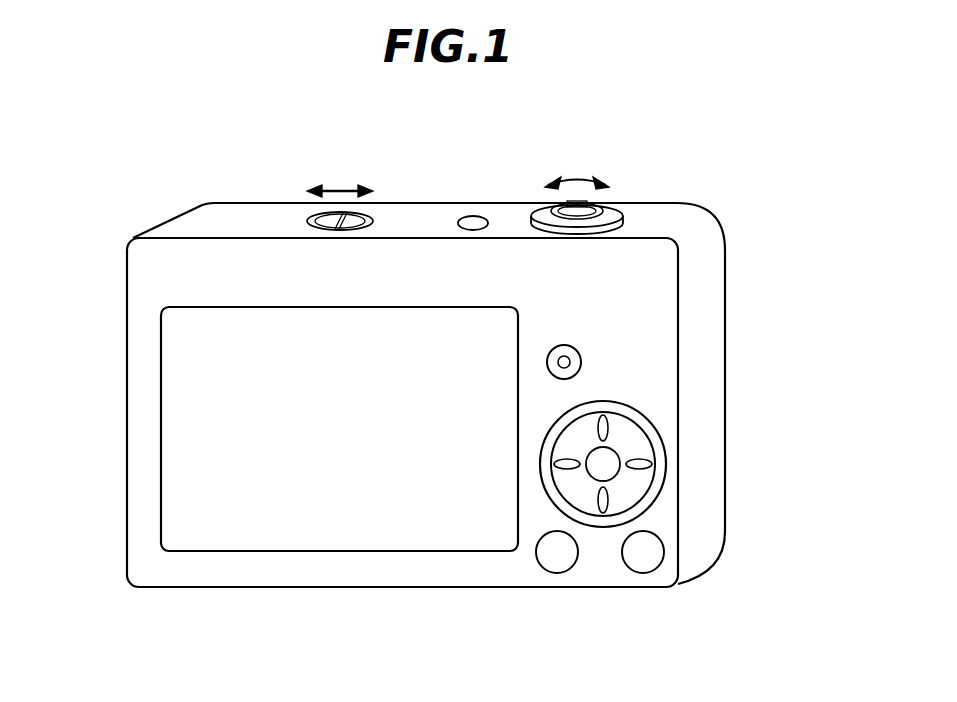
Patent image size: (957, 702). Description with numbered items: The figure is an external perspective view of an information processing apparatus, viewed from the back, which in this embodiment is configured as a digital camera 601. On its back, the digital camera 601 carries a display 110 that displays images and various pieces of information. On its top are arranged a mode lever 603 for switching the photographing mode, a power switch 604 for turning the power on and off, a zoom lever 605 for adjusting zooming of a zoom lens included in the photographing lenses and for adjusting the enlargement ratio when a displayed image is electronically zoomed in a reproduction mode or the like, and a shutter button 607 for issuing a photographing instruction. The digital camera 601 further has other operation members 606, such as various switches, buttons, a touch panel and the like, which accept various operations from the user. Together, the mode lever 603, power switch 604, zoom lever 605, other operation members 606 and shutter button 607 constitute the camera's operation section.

The digital camera 601 is at (745, 260).
The display 110 is at (188, 382).
The mode lever 603 is at (366, 214).
The power switch 604 is at (469, 217).
The zoom lever 605 is at (608, 216).
The shutter button 607 is at (558, 212).
The other operation members 606 is at (571, 362).